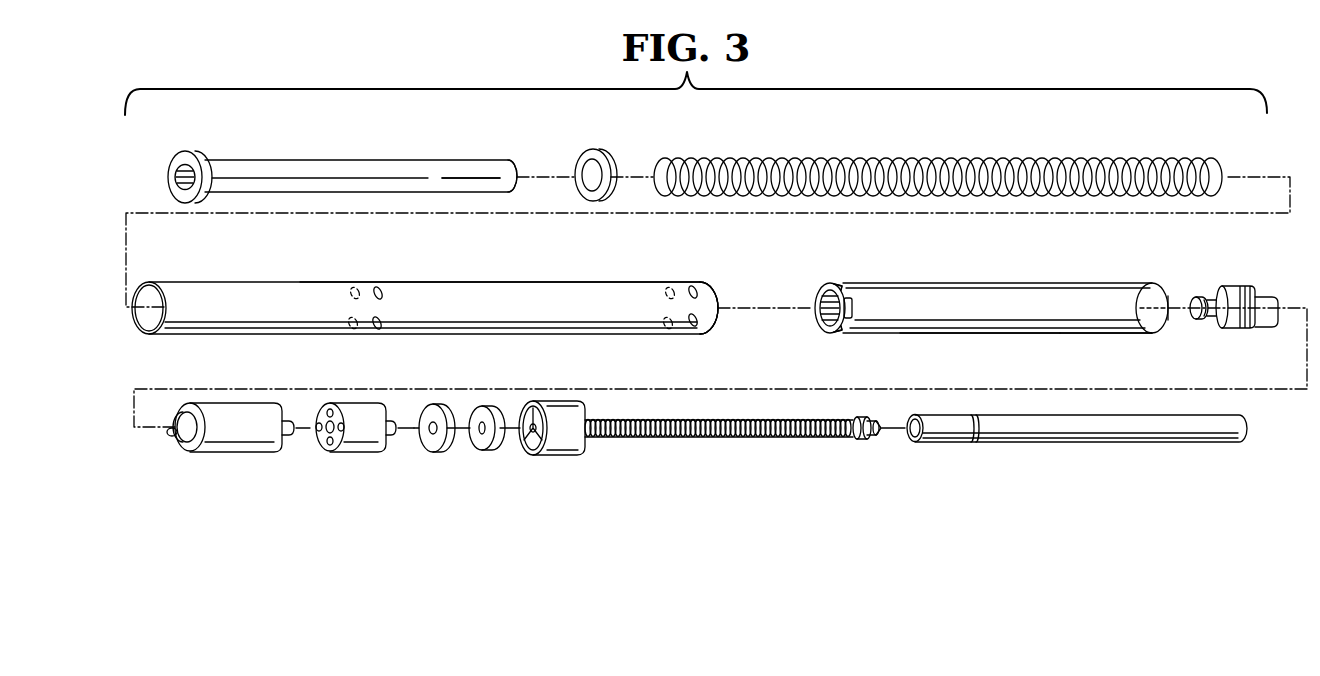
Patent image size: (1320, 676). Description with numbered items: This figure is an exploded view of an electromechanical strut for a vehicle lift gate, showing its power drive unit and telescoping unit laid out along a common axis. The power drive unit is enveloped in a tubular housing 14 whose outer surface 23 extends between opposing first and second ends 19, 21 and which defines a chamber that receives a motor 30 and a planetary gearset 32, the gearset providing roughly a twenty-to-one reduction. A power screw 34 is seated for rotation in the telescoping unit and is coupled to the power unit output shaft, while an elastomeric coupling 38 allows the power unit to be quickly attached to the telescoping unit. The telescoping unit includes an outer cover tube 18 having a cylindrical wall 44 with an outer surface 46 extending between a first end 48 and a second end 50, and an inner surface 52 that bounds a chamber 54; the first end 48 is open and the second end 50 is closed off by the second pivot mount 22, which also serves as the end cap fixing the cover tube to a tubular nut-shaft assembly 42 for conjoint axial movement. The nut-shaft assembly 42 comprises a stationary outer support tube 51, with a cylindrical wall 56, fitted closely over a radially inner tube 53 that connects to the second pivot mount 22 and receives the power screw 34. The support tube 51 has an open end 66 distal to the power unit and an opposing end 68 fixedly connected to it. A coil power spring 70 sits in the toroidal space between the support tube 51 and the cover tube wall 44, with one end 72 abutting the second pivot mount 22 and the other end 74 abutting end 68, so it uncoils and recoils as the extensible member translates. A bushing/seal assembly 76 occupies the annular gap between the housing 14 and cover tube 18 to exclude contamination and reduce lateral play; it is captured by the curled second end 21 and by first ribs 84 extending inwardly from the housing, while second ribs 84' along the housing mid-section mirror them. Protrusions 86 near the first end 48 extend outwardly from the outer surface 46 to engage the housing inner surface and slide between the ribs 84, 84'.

The housing 14 is at (270, 282).
The outer cover tube 18 is at (987, 282).
The first end 19 is at (148, 282).
The second end 21 is at (700, 282).
The second pivot mount 22 is at (1247, 330).
The outer surface 23 is at (506, 280).
The motor 30 is at (235, 452).
The planetary gearset 32 is at (350, 452).
The power screw 34 is at (752, 437).
The elastomeric coupling 38 is at (488, 449).
The tubular nut-shaft assembly 42 is at (1130, 445).
The cylindrical wall 44 is at (1117, 333).
The outer surface 46 is at (978, 338).
The first end 48 is at (820, 295).
The second end 50 is at (1153, 282).
The outer support tube 51 is at (440, 167).
The inner surface 52 is at (1173, 318).
The inner tube 53 is at (1057, 442).
The chamber 54 is at (1178, 291).
The cylindrical wall 56 is at (310, 167).
The open end 66 is at (508, 162).
The end 68 is at (182, 150).
The power spring 70 is at (970, 157).
The end 72 is at (1225, 158).
The end 74 is at (665, 153).
The bushing/seal assembly 76 is at (735, 290).
The first rib 84 is at (661, 308).
The second ribs 84' is at (371, 287).
The protrusion 86 is at (838, 284).